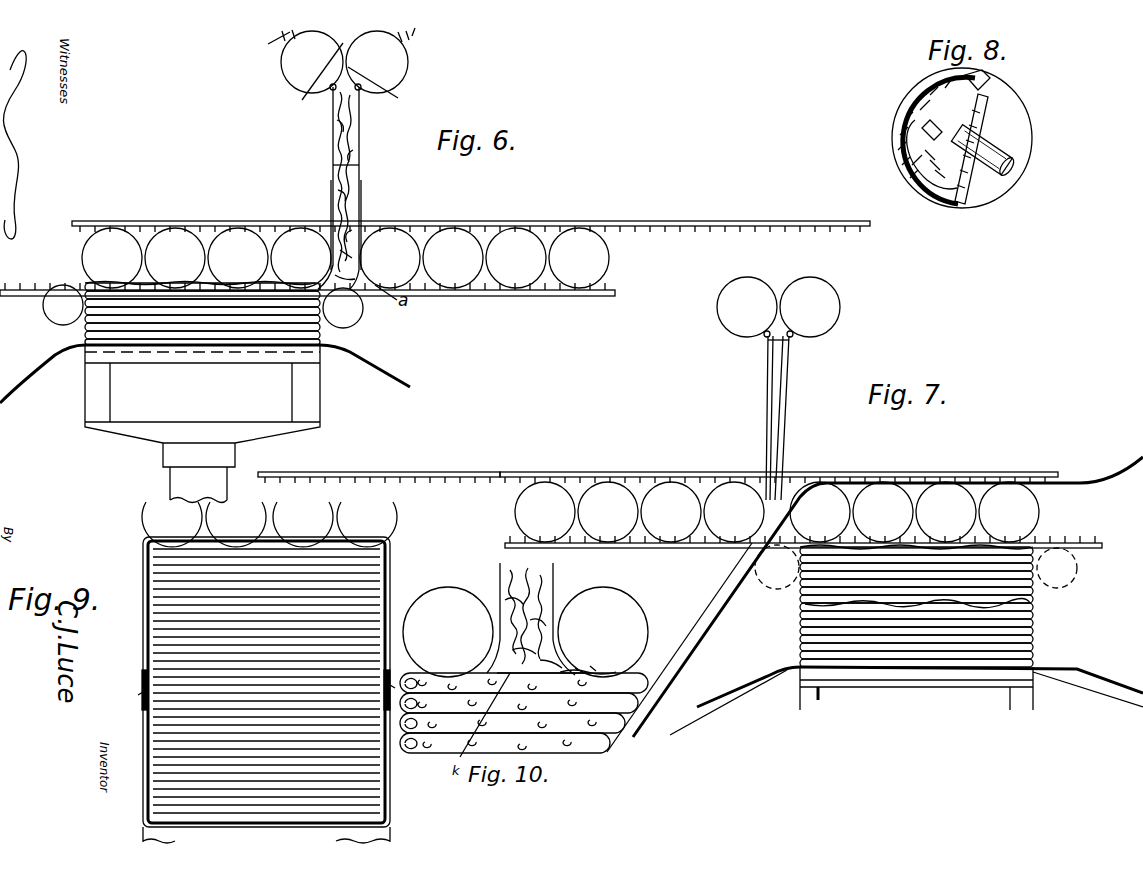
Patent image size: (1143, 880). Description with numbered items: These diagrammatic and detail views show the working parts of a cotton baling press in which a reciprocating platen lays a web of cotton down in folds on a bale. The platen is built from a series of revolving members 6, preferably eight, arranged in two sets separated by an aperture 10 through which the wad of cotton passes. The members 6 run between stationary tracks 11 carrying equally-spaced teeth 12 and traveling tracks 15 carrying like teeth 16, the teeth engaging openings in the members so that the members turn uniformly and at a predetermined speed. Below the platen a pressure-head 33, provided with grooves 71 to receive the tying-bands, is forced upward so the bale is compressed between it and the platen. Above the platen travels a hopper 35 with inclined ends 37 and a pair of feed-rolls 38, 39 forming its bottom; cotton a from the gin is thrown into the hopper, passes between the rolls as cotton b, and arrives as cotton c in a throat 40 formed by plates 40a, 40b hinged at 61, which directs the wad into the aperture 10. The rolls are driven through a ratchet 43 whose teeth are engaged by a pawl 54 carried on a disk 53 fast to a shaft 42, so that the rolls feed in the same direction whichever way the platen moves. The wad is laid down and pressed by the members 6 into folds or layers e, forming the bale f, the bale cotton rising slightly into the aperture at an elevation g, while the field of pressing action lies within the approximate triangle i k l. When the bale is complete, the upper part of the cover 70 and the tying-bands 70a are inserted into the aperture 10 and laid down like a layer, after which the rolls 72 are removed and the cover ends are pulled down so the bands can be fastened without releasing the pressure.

In FIG. 6, the revolving members 6 is at (345, 258).
In FIG. 7, the revolving members 6 is at (777, 512).
In FIG. 9, the revolving members 6 is at (321, 509).
In FIG. 10, the revolving members 6 is at (525, 632).
In FIG. 6, the aperture 10 is at (358, 265).
In FIG. 7, the aperture 10 is at (769, 538).
In FIG. 6, the stationary tracks 11 is at (508, 296).
In FIG. 7, the stationary tracks 11 is at (660, 546).
In FIG. 6, the teeth 12 is at (600, 290).
In FIG. 7, the teeth 12 is at (1072, 547).
In FIG. 6, the traveling tracks 15 is at (856, 222).
In FIG. 7, the traveling tracks 15 is at (648, 477).
In FIG. 6, the teeth 16 is at (862, 233).
In FIG. 7, the teeth 16 is at (492, 478).
In FIG. 6, the pressure-head 33 is at (202, 424).
In FIG. 7, the pressure-head 33 is at (872, 678).
In FIG. 9, the pressure-head 33 is at (375, 836).
In FIG. 6, the hopper 35 is at (418, 32).
In FIG. 6, the inclined ends 37 is at (268, 44).
In FIG. 6, the feed-roll 38 is at (312, 62).
In FIG. 7, the feed-roll 38 is at (747, 307).
In FIG. 6, the feed-roll 39 is at (377, 62).
In FIG. 7, the feed-roll 39 is at (810, 307).
In FIG. 6, the throat 40 is at (327, 175).
In FIG. 7, the throat 40 is at (767, 378).
In FIG. 6, the plate 40a is at (333, 201).
In FIG. 7, the plate 40a is at (764, 447).
In FIG. 6, the plate 40b is at (360, 199).
In FIG. 7, the plate 40b is at (781, 447).
In FIG. 8, the shaft 42 is at (1005, 172).
In FIG. 8, the ratchet 43 is at (920, 148).
In FIG. 8, the disk 53 is at (1008, 149).
In FIG. 8, the pawl 54 is at (980, 80).
In FIG. 7, the hinge 61 is at (793, 338).
In FIG. 6, the cover 70 is at (40, 370).
In FIG. 7, the cover 70 is at (788, 672).
In FIG. 9, the cover 70 is at (386, 782).
In FIG. 7, the tying-bands 70a is at (617, 757).
In FIG. 9, the tying-bands 70a is at (392, 541).
In FIG. 6, the grooves 71 is at (322, 365).
In FIG. 7, the grooves 71 is at (940, 672).
In FIG. 9, the grooves 71 is at (388, 810).
In FIG. 6, the rolls 72 is at (358, 318).
In FIG. 7, the rolls 72 is at (1056, 590).
In FIG. 6, the cotton a is at (315, 85).
In FIG. 6, the cotton b is at (379, 89).
In FIG. 6, the cotton c is at (356, 127).
In FIG. 6, the folds or layers of cotton e is at (95, 283).
In FIG. 7, the folds or layers of cotton e is at (1030, 542).
In FIG. 6, the bale f is at (168, 335).
In FIG. 7, the bale f is at (798, 633).
In FIG. 10, the elevation g is at (497, 673).
In FIG. 10, the triangle vertex i is at (500, 650).
In FIG. 10, the triangle vertex k is at (524, 715).
In FIG. 10, the triangle vertex l is at (600, 673).